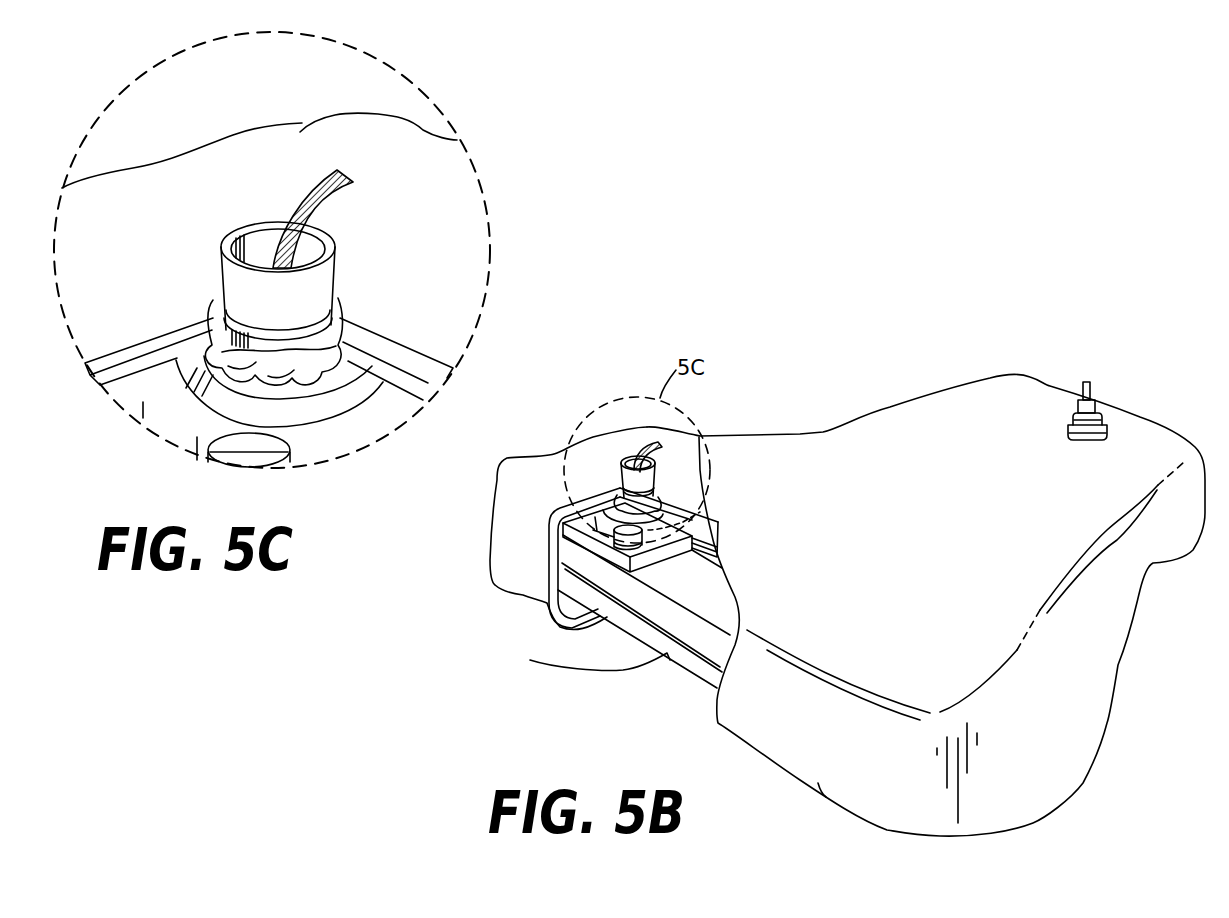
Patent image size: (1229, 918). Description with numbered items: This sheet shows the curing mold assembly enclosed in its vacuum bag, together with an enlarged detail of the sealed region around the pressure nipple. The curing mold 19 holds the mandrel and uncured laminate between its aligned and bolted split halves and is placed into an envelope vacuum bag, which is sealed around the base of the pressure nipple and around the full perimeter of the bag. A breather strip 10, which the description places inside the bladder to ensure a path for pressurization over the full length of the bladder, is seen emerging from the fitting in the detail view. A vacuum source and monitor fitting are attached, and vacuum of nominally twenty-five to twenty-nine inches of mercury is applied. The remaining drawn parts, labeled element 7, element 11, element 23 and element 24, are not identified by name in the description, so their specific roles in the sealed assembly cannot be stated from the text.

In FIG. 5B, the inflatable bladder body 7 is at (540, 607).
In FIG. 5C, the breather strip 10 is at (327, 188).
In FIG. 5C, the collar sleeve 11 is at (322, 294).
In FIG. 5B, the curing mold 19 is at (672, 652).
In FIG. 5B, the flexible cover portion 23 is at (505, 532).
In FIG. 5C, the sealant bead 24 is at (320, 378).